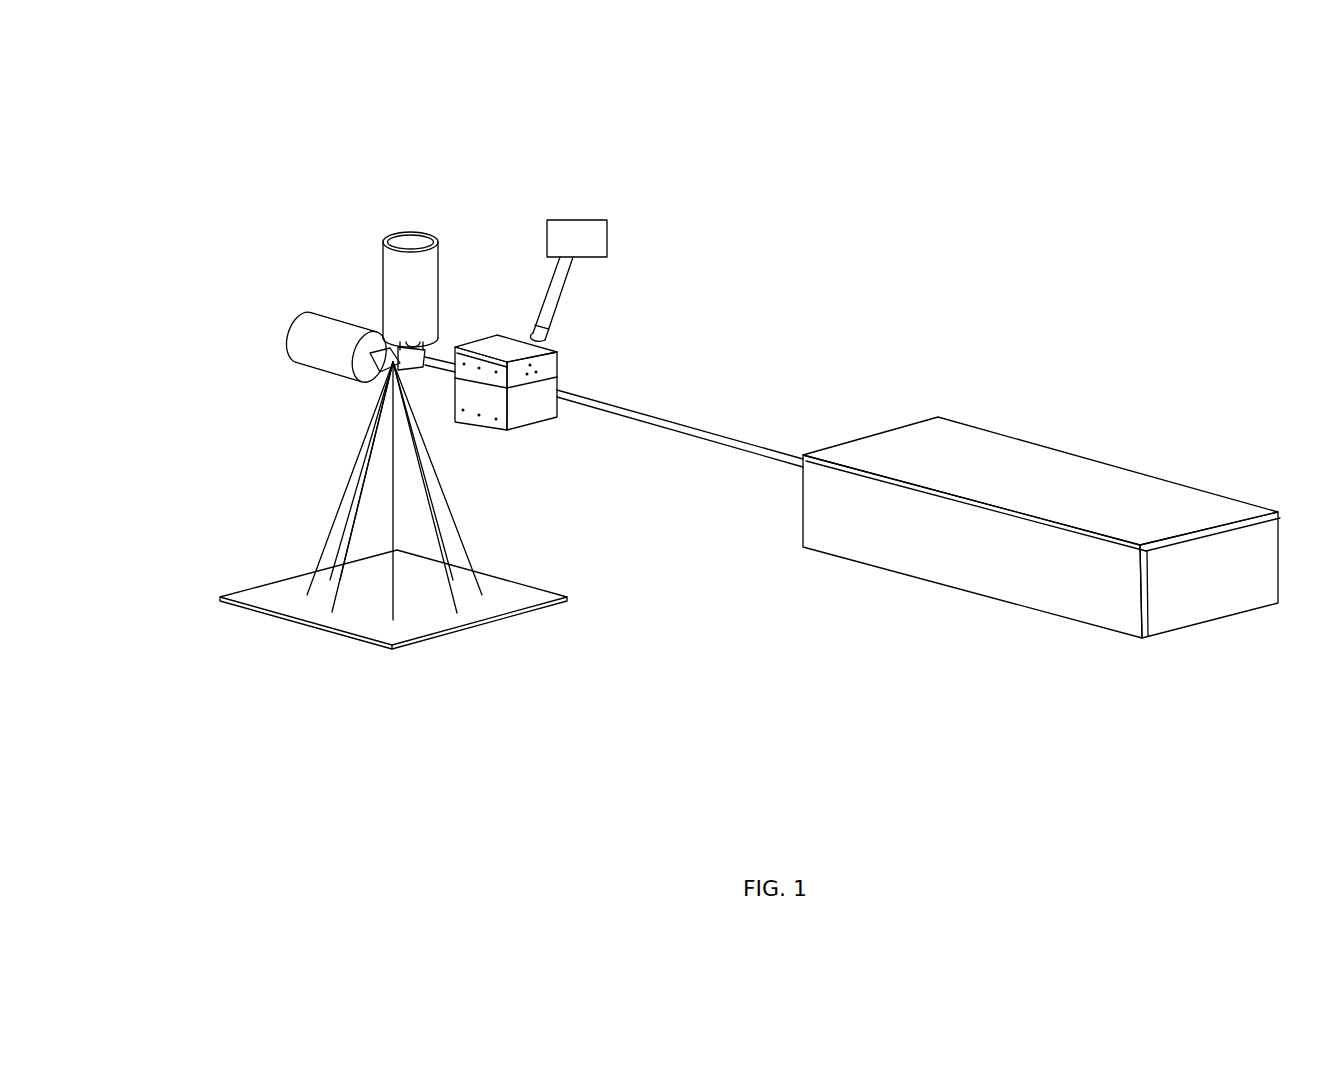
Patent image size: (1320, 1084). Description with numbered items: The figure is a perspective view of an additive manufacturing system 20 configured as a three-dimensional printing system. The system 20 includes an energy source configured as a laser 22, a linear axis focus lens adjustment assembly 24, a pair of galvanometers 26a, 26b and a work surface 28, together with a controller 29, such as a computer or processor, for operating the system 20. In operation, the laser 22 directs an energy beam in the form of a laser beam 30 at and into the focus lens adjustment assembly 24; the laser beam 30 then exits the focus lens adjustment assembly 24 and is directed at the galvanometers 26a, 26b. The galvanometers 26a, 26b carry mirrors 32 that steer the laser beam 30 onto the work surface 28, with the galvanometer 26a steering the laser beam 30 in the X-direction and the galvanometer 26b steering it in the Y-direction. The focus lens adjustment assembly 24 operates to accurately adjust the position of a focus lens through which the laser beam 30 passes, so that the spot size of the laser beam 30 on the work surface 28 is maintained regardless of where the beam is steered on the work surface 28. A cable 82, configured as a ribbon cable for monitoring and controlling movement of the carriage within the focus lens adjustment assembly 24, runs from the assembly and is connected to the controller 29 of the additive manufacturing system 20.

The additive manufacturing system 20 is at (203, 172).
The laser 22 is at (1095, 458).
The linear axis focus lens adjustment assembly 24 is at (530, 430).
The galvanometer 26a is at (413, 233).
The galvanometer 26b is at (285, 337).
The work surface 28 is at (540, 590).
The controller 29 is at (594, 219).
The laser beam 30 is at (440, 353).
The mirrors 32 is at (385, 366).
The cable 82 is at (562, 293).